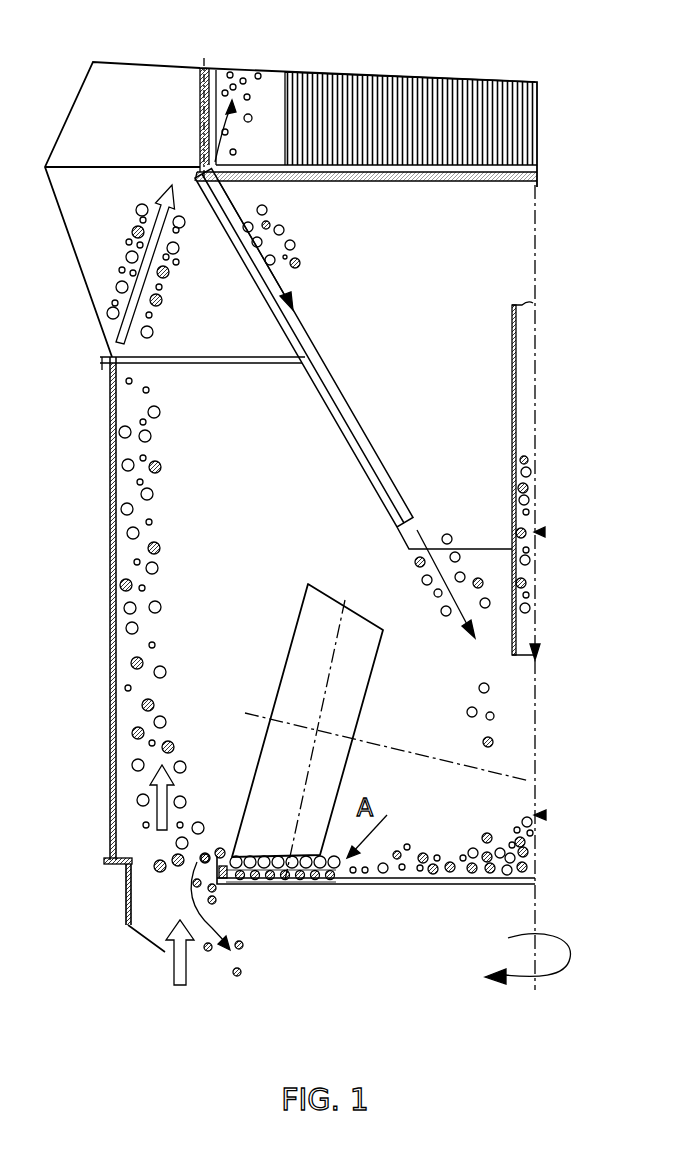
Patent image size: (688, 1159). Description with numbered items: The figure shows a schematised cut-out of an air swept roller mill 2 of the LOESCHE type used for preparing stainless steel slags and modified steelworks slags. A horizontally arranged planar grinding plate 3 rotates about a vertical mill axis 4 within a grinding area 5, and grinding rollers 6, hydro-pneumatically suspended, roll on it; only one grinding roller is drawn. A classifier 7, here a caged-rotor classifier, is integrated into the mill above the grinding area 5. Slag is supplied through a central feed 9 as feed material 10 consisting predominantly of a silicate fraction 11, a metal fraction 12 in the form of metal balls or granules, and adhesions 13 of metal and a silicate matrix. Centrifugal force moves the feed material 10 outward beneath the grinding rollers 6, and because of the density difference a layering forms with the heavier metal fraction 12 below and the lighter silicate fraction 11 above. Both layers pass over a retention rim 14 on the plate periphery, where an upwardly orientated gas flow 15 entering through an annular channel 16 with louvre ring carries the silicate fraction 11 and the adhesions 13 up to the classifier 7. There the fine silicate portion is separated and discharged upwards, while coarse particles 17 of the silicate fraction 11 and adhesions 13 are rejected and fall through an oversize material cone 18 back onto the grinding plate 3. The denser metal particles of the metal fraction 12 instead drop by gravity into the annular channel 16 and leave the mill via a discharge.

The air swept roller mill 2 is at (518, 70).
The grinding plate 3 is at (440, 884).
The vertical mill axis 4 is at (535, 407).
The grinding area 5 is at (409, 696).
The grinding rollers 6 is at (300, 637).
The classifier 7 is at (545, 108).
The central feed 9 is at (528, 343).
The feed material 10 is at (545, 532).
The silicate fraction 11 is at (118, 305).
The metal fraction 12 is at (530, 484).
The adhesions 13 is at (137, 233).
The retention rim 14 is at (213, 888).
The gas flow 15 is at (174, 968).
The annular channel 16 is at (140, 900).
The coarse particles 17 is at (295, 245).
The oversize material cone 18 is at (442, 446).